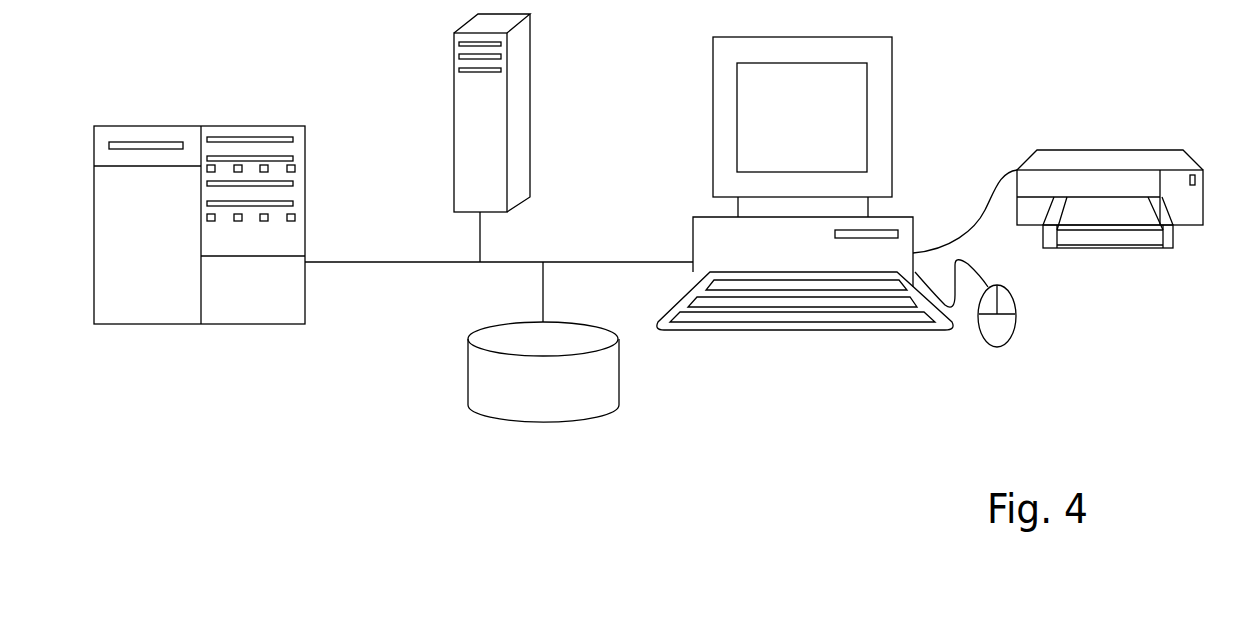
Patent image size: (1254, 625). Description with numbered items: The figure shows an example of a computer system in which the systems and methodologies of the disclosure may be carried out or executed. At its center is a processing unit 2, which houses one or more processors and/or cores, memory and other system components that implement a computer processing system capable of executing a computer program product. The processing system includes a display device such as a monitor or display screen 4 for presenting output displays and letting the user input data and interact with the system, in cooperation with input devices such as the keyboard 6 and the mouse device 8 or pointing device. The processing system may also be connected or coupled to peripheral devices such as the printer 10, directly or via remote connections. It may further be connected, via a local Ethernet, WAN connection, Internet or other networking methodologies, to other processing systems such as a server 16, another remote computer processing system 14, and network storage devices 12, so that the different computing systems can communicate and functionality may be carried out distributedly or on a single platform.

The processing unit 2 is at (698, 242).
The display screen 4 is at (892, 133).
The keyboard 6 is at (862, 332).
The mouse device 8 is at (1017, 330).
The printer 10 is at (1109, 149).
The network storage devices 12 is at (560, 420).
The remote computer processing system 14 is at (530, 102).
The server 16 is at (246, 126).